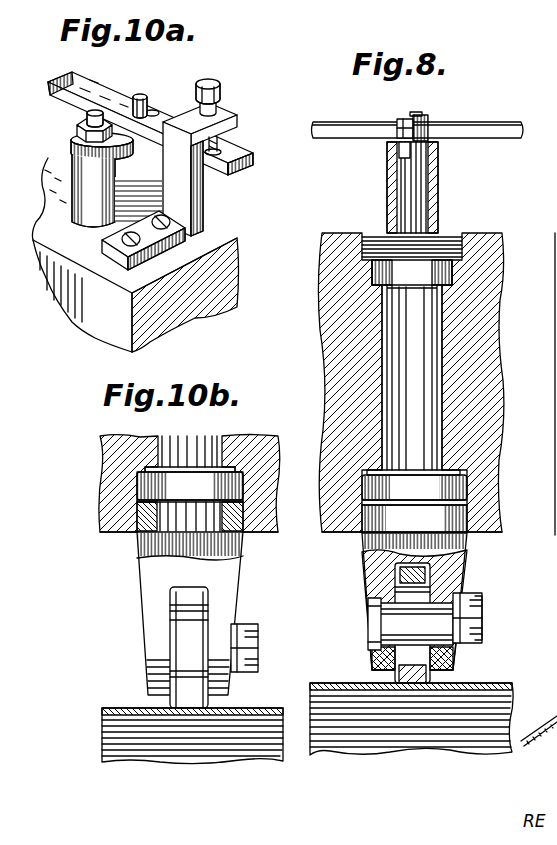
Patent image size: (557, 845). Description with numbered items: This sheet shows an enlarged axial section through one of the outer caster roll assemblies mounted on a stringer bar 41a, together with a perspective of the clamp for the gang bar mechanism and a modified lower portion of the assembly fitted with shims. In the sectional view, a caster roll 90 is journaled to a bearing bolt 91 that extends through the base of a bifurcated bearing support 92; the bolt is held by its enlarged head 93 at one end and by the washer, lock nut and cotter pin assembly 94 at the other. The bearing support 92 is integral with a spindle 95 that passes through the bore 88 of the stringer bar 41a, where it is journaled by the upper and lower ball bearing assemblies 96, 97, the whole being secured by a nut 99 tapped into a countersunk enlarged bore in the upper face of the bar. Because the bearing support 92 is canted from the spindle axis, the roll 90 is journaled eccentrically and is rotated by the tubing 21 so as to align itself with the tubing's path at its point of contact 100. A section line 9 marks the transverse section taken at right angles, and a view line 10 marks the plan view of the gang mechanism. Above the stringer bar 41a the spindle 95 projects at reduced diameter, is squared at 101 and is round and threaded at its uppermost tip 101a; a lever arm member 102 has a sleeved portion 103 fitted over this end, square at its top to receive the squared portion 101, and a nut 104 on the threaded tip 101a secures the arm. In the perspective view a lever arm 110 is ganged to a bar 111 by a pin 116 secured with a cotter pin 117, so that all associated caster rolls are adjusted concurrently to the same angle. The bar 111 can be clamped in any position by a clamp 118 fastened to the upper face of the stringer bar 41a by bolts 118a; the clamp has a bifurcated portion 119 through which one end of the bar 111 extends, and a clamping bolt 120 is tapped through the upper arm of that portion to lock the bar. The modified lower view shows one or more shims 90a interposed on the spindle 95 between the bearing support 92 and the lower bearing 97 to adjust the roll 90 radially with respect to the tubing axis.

In FIG. 8, the section line 9- 9 is at (398, 98).
In FIG. 8, the view line 10- 10 is at (334, 110).
In FIG. 10B, the tubing 21 is at (131, 752).
In FIG. 8, the tubing 21 is at (338, 748).
In FIG. 10A, the stringer bar 41a is at (145, 305).
In FIG. 10B, the stringer bar 41a is at (130, 466).
In FIG. 8, the stringer bar 41a is at (481, 328).
In FIG. 8, the bore 88 is at (450, 392).
In FIG. 10B, the caster roll 90 is at (176, 706).
In FIG. 8, the caster roll 90 is at (397, 682).
In FIG. 10B, the shims 90a is at (140, 535).
In FIG. 8, the bearing bolt 91 is at (483, 612).
In FIG. 10B, the bifurcated bearing support 92 is at (148, 592).
In FIG. 8, the bifurcated bearing support 92 is at (462, 567).
In FIG. 8, the enlarged head 93 is at (371, 632).
In FIG. 8, the washer, lock nut and cotter pin assembly 94 is at (478, 631).
In FIG. 10B, the spindle 95 is at (190, 443).
In FIG. 8, the spindle 95 is at (423, 443).
In FIG. 8, the upper ball bearing assembly 96 is at (453, 272).
In FIG. 10B, the lower ball bearing assembly 97 is at (138, 490).
In FIG. 8, the lower ball bearing assembly 97 is at (463, 489).
In FIG. 8, the nut 99 is at (442, 234).
In FIG. 8, the point of contact 100 is at (413, 685).
In FIG. 8, the squared upper portion 101 is at (429, 155).
In FIG. 8, the threaded uppermost tip 101a is at (404, 114).
In FIG. 10A, the lever arm member 102 is at (117, 199).
In FIG. 8, the sleeved portion 103 is at (387, 183).
In FIG. 8, the nut 104 is at (399, 130).
In FIG. 10A, the lever arm 110 is at (72, 136).
In FIG. 10A, the gang bar 111 is at (62, 80).
In FIG. 10A, the pin 116 is at (143, 96).
In FIG. 10A, the cotter pin 117 is at (155, 111).
In FIG. 10A, the clamp 118 is at (187, 236).
In FIG. 10A, the bolts 118a is at (107, 242).
In FIG. 10A, the bifurcated portion 119 is at (215, 181).
In FIG. 10A, the clamping bolt 120 is at (218, 92).